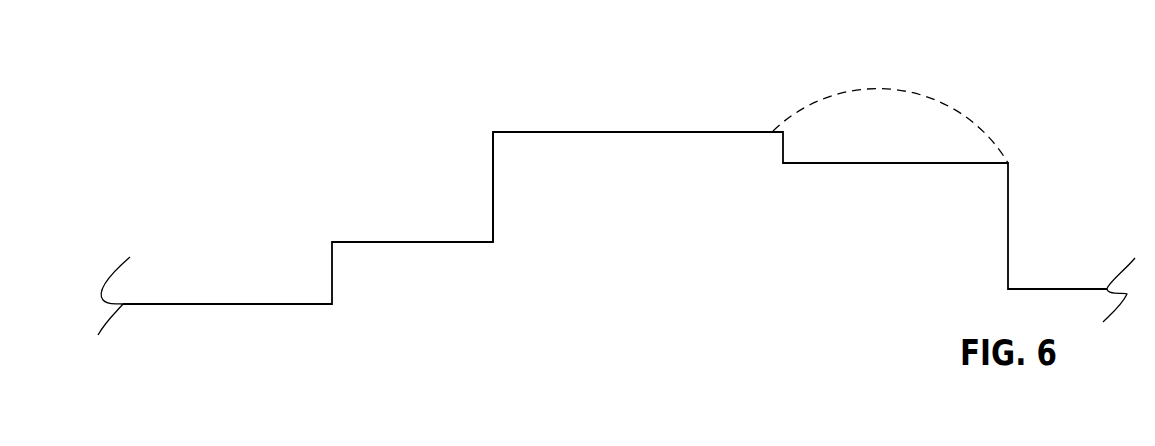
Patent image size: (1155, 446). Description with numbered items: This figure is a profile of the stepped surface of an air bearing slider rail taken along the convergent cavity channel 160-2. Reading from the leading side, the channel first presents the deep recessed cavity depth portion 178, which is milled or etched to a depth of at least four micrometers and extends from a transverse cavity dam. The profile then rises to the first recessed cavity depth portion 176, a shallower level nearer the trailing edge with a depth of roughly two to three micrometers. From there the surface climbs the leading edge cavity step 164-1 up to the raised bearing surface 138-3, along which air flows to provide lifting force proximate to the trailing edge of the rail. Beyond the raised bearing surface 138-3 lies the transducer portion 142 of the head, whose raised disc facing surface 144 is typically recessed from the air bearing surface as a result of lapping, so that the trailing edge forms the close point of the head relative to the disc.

The convergent cavity channel 160-2 is at (623, 93).
The deep recessed cavity depth portion 178 is at (282, 304).
The first recessed cavity depth portion 176 is at (367, 242).
The leading edge cavity step 164-1 is at (493, 163).
The raised bearing surface 138-3 is at (658, 132).
The raised disc facing surface 144 is at (960, 163).
The transducer portion 142 is at (1057, 289).